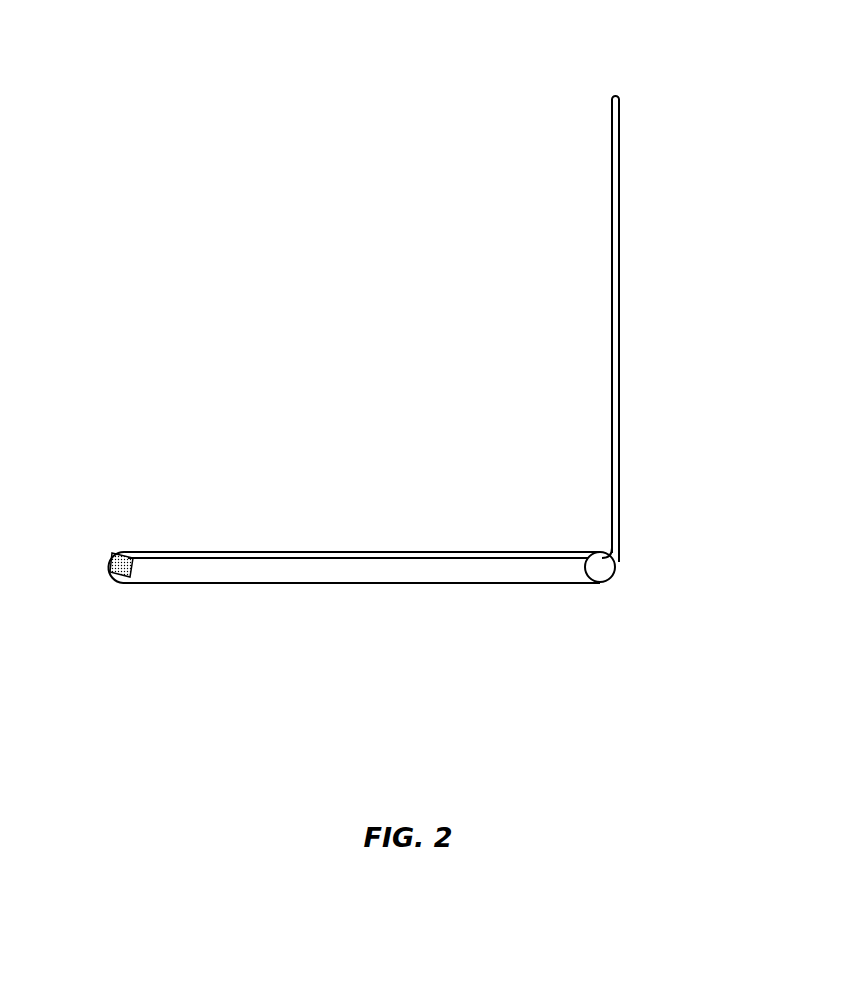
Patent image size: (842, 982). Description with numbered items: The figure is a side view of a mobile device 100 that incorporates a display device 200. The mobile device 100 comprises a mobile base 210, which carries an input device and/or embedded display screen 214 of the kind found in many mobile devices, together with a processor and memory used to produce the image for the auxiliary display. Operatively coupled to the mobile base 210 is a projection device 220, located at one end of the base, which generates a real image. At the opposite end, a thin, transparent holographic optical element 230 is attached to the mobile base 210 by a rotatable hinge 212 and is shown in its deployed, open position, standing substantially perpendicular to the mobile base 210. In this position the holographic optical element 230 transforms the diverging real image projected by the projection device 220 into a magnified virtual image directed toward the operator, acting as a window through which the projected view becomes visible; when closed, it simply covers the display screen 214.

The display device 200 is at (468, 398).
The mobile device 100 is at (354, 567).
The mobile base 210 is at (390, 568).
The input device and/or embedded display screen 214 is at (297, 553).
The rotatable hinge 212 is at (600, 567).
The holographic optical element 230 is at (619, 95).
The projection device 220 is at (120, 565).